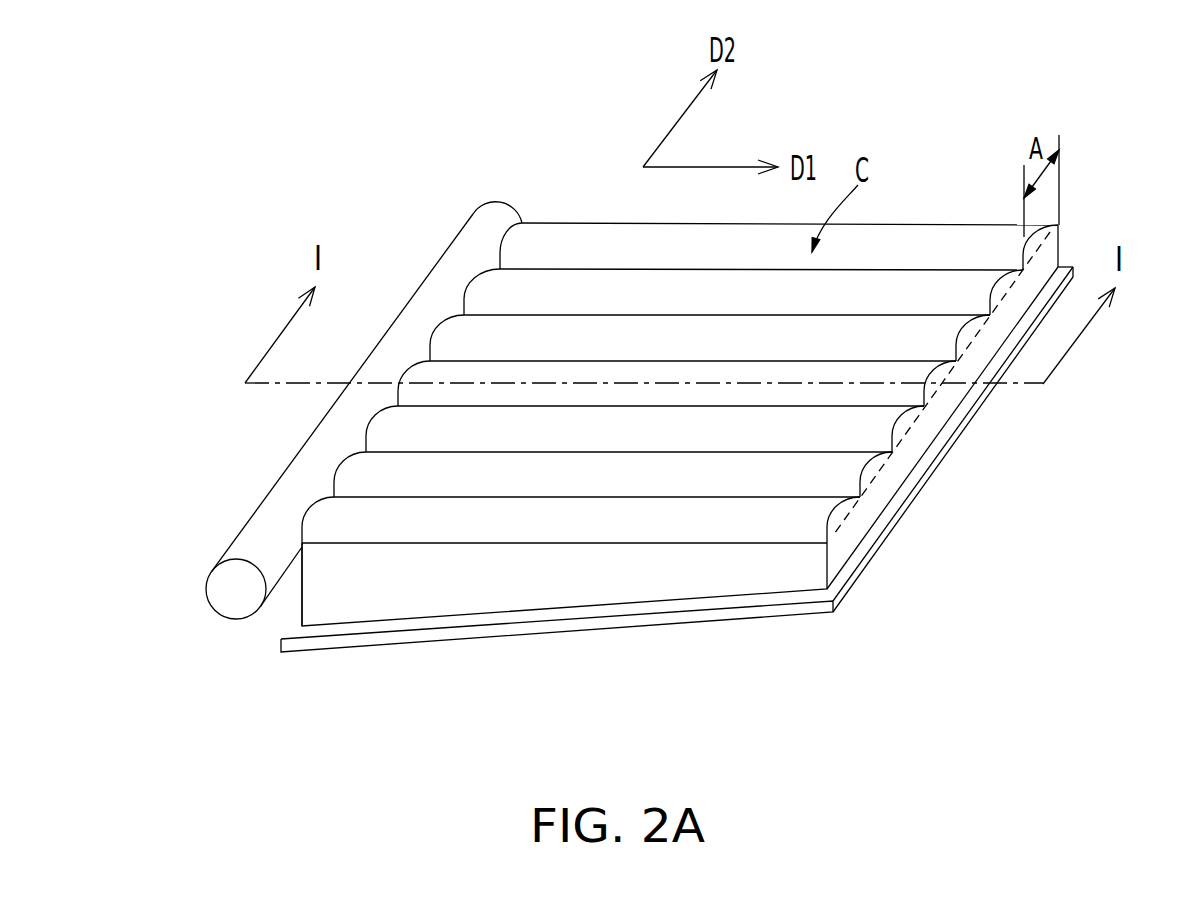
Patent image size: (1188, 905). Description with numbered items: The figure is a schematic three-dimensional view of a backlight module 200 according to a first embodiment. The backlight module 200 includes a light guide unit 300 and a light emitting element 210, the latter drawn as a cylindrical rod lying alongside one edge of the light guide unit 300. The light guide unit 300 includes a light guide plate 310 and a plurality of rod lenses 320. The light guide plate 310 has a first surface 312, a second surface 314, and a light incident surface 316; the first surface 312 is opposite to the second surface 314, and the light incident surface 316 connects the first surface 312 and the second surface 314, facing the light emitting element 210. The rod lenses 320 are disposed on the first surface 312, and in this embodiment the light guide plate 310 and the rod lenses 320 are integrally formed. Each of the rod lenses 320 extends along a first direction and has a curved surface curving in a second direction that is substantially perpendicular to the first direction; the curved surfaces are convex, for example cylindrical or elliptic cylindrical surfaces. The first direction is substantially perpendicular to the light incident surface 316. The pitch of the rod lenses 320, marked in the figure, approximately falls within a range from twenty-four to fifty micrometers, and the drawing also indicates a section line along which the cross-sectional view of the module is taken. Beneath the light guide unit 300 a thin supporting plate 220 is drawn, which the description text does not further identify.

The backlight module 200 is at (964, 685).
The light emitting element 210 is at (233, 595).
The base plate 220 is at (413, 631).
The light guide unit 300 is at (668, 435).
The light guide plate 310 is at (646, 435).
The first surface 312 is at (1005, 300).
The second surface 314 is at (848, 560).
The light incident surface 316 is at (302, 593).
The rod lenses 320 is at (870, 470).